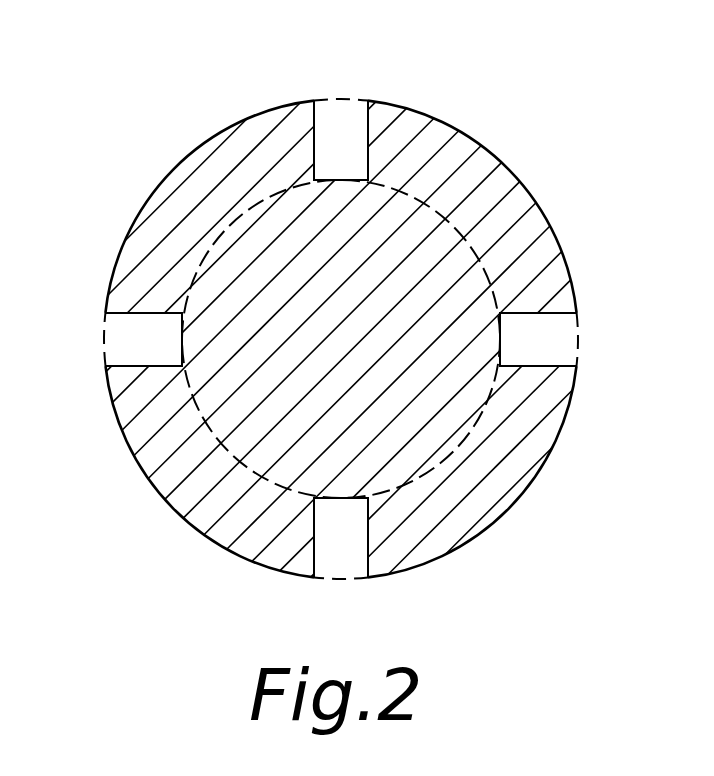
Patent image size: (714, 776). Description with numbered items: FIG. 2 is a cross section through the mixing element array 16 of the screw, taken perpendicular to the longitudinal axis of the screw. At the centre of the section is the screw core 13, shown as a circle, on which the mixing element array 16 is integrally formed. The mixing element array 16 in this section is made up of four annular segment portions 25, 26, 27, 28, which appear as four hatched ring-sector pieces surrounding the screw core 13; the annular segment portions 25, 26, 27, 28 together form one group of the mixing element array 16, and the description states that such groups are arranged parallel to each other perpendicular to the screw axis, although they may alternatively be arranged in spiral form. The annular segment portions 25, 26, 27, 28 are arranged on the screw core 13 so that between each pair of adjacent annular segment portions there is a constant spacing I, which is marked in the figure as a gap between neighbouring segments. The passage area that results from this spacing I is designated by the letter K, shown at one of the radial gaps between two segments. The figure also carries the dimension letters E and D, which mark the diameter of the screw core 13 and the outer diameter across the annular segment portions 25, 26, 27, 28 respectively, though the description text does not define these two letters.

The screw core 13 is at (180, 338).
The mixing element array 16 is at (493, 152).
The annular segment portion 25 is at (530, 222).
The annular segment portion 26 is at (196, 178).
The annular segment portion 27 is at (190, 497).
The annular segment portion 28 is at (492, 497).
The passage area K is at (332, 117).
The bore diameter E is at (184, 345).
The spacing I is at (623, 262).
The outer diameter D is at (578, 378).